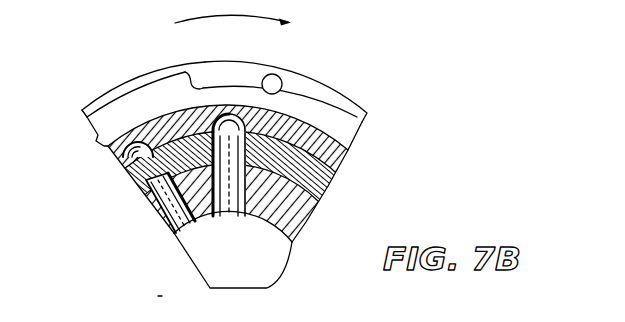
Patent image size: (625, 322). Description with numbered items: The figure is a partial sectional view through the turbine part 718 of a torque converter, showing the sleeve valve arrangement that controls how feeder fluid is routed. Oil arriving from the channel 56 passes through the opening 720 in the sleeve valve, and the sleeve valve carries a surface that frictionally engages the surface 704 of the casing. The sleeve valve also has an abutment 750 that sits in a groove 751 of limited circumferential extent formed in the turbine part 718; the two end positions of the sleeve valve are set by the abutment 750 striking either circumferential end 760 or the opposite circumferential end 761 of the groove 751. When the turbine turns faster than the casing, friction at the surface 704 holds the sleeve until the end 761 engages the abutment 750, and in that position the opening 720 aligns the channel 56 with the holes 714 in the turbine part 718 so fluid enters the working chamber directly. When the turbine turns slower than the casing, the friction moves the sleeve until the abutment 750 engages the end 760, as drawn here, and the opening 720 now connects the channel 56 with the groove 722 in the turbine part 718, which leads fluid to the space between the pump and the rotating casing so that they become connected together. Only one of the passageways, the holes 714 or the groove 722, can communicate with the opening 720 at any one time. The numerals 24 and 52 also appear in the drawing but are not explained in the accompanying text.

The surface of the casing 704 is at (350, 125).
The turbine part 718 is at (342, 172).
The inner core 24 is at (296, 217).
The groove in turbine part 722 is at (257, 128).
The opening in sleeve valve 720 is at (150, 185).
The holes in turbine part 714 is at (124, 160).
The channel 56 is at (158, 230).
The shaft 52 is at (243, 261).
The circumferential end of groove 761 is at (196, 84).
The groove of limited circumferential extent 751 is at (209, 88).
The circumferential end of groove 760 is at (307, 83).
The abutment 750 is at (282, 78).